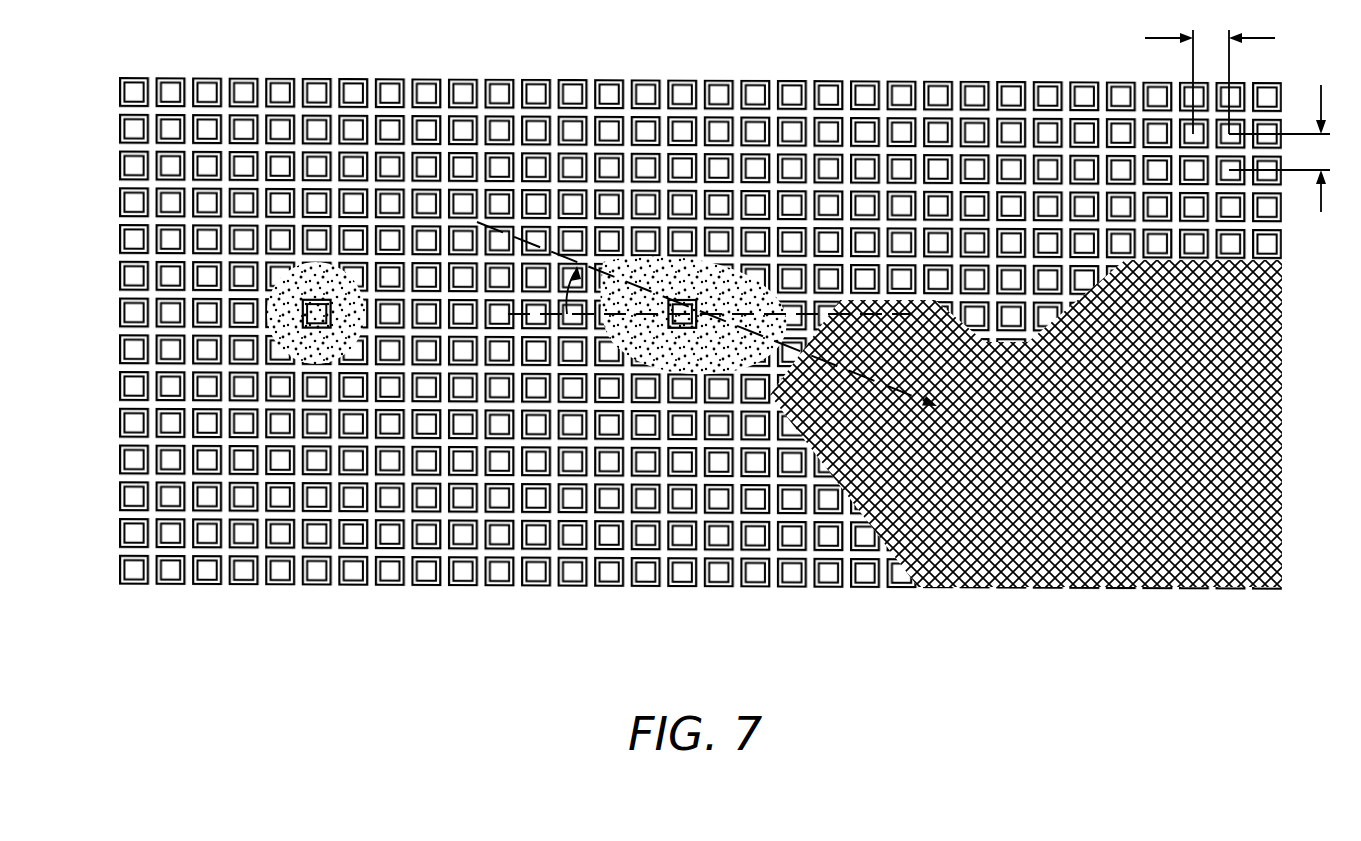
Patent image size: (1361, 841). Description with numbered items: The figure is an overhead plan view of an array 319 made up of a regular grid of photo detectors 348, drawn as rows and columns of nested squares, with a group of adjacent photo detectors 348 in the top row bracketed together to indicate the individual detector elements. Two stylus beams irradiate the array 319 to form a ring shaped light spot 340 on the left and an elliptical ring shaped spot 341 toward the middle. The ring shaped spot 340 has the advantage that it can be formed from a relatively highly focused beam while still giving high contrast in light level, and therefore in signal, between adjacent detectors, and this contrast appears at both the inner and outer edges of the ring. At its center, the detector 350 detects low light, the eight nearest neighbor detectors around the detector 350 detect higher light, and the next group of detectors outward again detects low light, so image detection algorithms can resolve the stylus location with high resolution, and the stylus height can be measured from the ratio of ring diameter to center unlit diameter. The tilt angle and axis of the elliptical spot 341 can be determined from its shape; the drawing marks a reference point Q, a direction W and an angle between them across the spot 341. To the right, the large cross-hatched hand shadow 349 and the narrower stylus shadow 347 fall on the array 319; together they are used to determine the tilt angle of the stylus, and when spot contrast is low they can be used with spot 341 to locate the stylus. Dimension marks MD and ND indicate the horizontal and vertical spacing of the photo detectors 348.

The array 319 is at (100, 80).
The ring shaped light spot 340 is at (340, 348).
The elliptical ring shaped spot 341 is at (652, 337).
The stylus shadow 347 is at (800, 402).
The photo detectors 348 is at (427, 78).
The hand shadow 349 is at (1166, 490).
The detector 350 is at (318, 320).
The reference point Q is at (696, 305).
The direction line W is at (956, 410).
The pillar pitch dimension MD is at (1188, 80).
The row pitch dimension ND is at (1286, 170).